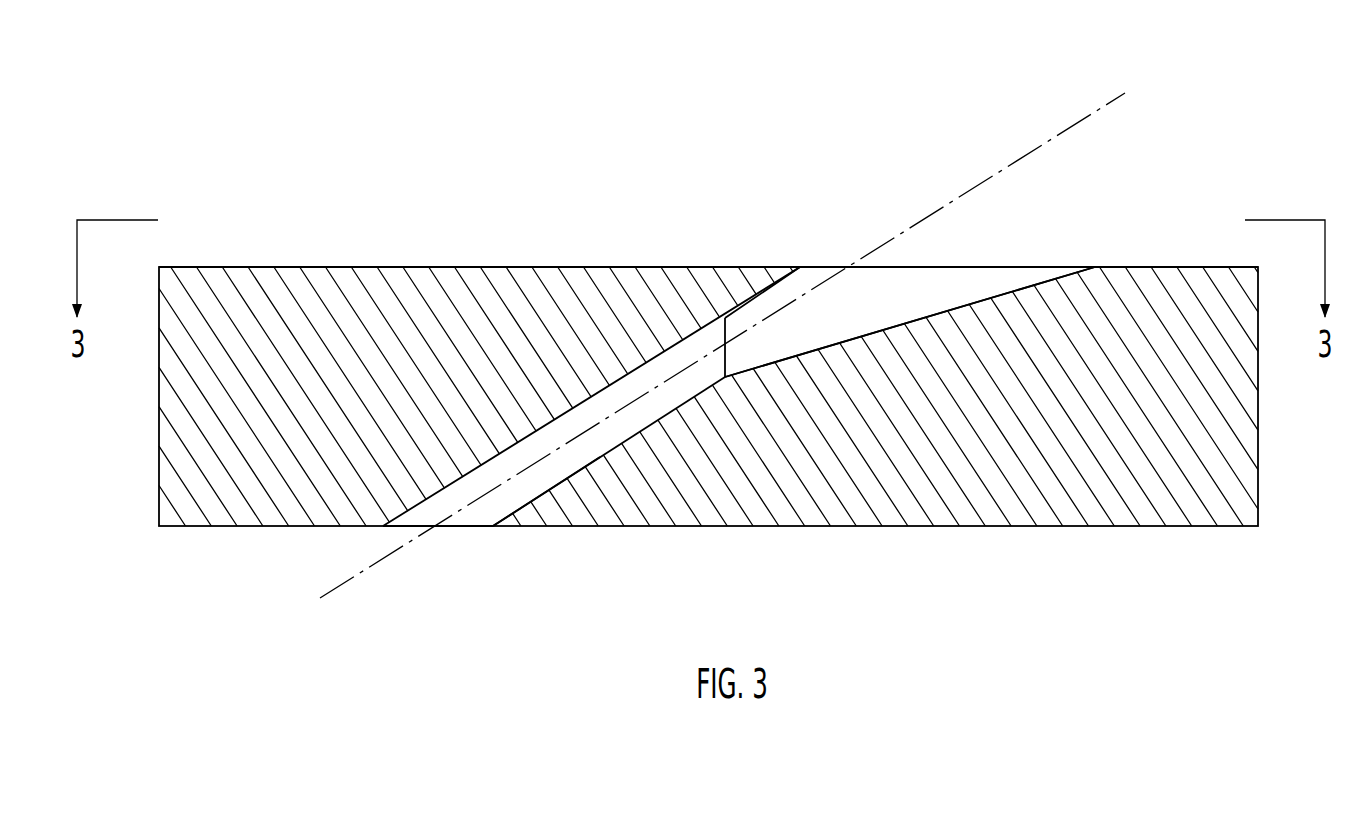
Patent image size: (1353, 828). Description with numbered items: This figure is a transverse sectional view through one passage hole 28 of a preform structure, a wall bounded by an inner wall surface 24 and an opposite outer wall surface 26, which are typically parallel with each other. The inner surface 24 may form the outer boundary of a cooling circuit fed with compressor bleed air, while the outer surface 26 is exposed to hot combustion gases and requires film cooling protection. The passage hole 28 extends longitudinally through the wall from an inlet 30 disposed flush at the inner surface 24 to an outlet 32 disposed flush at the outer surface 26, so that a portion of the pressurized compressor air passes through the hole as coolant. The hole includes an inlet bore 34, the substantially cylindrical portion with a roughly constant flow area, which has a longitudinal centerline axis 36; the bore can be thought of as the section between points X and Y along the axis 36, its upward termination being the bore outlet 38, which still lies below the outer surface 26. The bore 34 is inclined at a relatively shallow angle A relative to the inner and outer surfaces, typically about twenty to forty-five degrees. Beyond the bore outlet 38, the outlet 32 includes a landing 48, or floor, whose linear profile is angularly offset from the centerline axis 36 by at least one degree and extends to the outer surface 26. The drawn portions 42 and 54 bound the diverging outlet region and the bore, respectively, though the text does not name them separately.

The inner wall surface 24 is at (1003, 528).
The outer wall surface 26 is at (318, 265).
The passage hole 28 is at (445, 554).
The inlet 30 is at (440, 510).
The outlet 32 is at (910, 287).
The inlet bore 34 is at (567, 462).
The centerline axis 36 is at (1107, 103).
The bore outlet 38 is at (726, 344).
The diffuser section 42 is at (868, 296).
The landing 48 is at (858, 335).
The metering wall 54 is at (511, 505).
The point X is at (438, 527).
The point Y is at (723, 344).
The inclination angle A is at (774, 321).